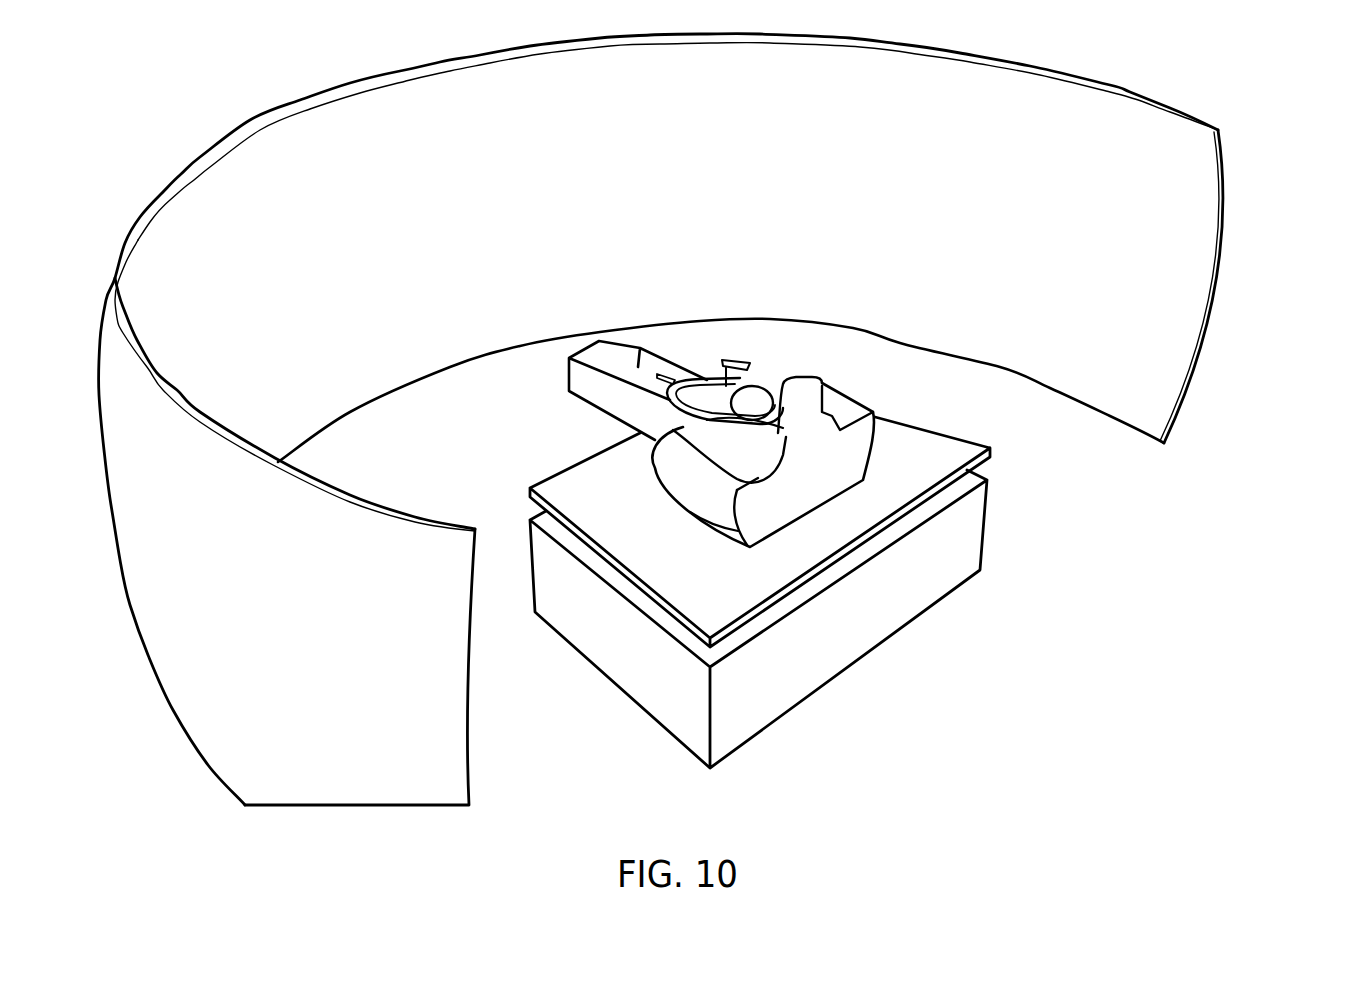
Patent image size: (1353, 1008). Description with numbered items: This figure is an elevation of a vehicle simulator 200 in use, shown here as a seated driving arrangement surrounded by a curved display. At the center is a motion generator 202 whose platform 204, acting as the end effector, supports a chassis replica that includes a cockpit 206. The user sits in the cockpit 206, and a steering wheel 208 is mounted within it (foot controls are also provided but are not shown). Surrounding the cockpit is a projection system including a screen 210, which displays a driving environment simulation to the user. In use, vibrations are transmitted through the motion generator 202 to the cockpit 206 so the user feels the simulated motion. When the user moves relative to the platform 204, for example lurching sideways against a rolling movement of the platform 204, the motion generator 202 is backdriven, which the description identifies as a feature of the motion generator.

The vehicle simulator 200 is at (1122, 580).
The motion generator 202 is at (883, 633).
The platform (end effector) 204 is at (658, 536).
The cockpit 206 is at (863, 410).
The steering wheel 208 is at (693, 376).
The screen 210 is at (1218, 130).